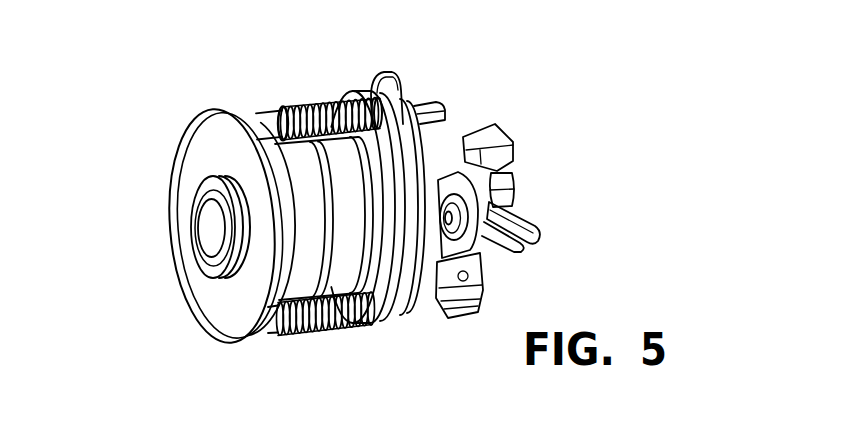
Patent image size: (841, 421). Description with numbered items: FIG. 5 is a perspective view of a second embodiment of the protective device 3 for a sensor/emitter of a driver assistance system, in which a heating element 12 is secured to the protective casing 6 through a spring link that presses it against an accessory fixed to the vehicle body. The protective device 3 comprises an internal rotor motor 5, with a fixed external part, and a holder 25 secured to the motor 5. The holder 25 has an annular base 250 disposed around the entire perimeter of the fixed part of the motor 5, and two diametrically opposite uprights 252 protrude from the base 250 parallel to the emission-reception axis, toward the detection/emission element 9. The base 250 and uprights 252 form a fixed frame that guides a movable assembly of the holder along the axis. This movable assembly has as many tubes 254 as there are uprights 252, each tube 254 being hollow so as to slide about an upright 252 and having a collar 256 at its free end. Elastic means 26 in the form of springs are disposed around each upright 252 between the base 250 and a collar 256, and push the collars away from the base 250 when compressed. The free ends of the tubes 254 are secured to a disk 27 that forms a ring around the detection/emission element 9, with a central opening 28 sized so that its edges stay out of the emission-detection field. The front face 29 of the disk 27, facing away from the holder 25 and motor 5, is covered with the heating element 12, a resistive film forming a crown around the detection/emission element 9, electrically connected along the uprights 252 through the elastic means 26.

The protective device 3 is at (550, 86).
The internal rotor motor 5 is at (488, 246).
The protective casing 6 is at (354, 249).
The detection/emission element 9 is at (208, 226).
The heating element 12 is at (220, 317).
The holder 25 is at (420, 148).
The elastic means 26 is at (326, 91).
The disk 27 is at (214, 100).
The central opening 28 is at (213, 273).
The front face 29 is at (193, 133).
The annular base 250 is at (490, 144).
The uprights 252 is at (388, 125).
The tubes 254 is at (264, 120).
The collar 256 is at (288, 110).